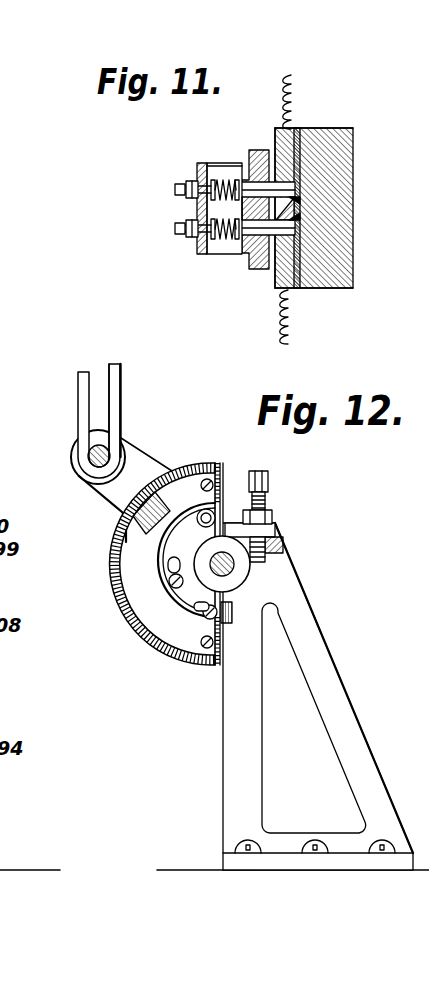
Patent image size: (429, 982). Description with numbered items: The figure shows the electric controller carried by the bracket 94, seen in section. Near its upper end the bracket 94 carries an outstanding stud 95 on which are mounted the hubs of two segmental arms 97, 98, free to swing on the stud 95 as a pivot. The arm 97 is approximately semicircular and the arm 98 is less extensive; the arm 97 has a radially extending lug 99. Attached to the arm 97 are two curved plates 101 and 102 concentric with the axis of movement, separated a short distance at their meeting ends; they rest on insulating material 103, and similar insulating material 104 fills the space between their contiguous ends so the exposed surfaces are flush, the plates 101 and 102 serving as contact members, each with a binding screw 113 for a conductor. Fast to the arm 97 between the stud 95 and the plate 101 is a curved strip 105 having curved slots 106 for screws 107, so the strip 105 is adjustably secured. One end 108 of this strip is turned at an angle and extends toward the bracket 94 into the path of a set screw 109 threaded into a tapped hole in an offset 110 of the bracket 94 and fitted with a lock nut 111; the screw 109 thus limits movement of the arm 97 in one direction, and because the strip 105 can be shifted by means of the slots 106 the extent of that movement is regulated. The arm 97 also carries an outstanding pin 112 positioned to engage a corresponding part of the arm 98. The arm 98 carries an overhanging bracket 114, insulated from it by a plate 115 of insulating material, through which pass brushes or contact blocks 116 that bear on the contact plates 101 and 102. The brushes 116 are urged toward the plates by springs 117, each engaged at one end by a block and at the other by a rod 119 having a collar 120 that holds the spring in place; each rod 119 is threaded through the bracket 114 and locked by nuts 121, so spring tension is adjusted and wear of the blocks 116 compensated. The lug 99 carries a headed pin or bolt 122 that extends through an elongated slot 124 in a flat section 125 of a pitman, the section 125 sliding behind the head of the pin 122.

In FIG. 12, the bracket 94 is at (343, 731).
In FIG. 12, the stud 95 is at (233, 572).
In FIG. 11, the segmental arm 97 is at (343, 257).
In FIG. 12, the segmental arm 97 is at (155, 646).
In FIG. 11, the segmental arm 98 is at (258, 150).
In FIG. 12, the lug 99 is at (132, 458).
In FIG. 11, the curved plate 101 is at (275, 278).
In FIG. 12, the curved plate 101 is at (173, 628).
In FIG. 11, the curved plate 102 is at (291, 126).
In FIG. 12, the curved plate 102 is at (175, 492).
In FIG. 11, the insulating material 103 is at (297, 290).
In FIG. 12, the insulating material 103 is at (137, 620).
In FIG. 12, the insulating material between plates 104 is at (150, 522).
In FIG. 12, the curved strip 105 is at (187, 600).
In FIG. 12, the curved slots 106 is at (170, 576).
In FIG. 12, the screws 107 is at (177, 588).
In FIG. 12, the angled end 108 is at (228, 615).
In FIG. 12, the set screw 109 is at (267, 497).
In FIG. 12, the offset 110 is at (275, 530).
In FIG. 12, the lock nut 111 is at (272, 513).
In FIG. 12, the pin 112 is at (226, 500).
In FIG. 12, the binding screw 113 is at (207, 481).
In FIG. 11, the overhanging bracket 114 is at (213, 165).
In FIG. 11, the insulating plate 115 is at (248, 238).
In FIG. 11, the brushes 116 is at (268, 188).
In FIG. 11, the springs 117 is at (223, 180).
In FIG. 11, the rod 119 is at (175, 188).
In FIG. 11, the collar 120 is at (200, 166).
In FIG. 11, the nuts 121 is at (186, 199).
In FIG. 12, the headed pin 122 is at (92, 465).
In FIG. 12, the elongated slot 124 is at (89, 406).
In FIG. 12, the pitman section 125 is at (121, 389).